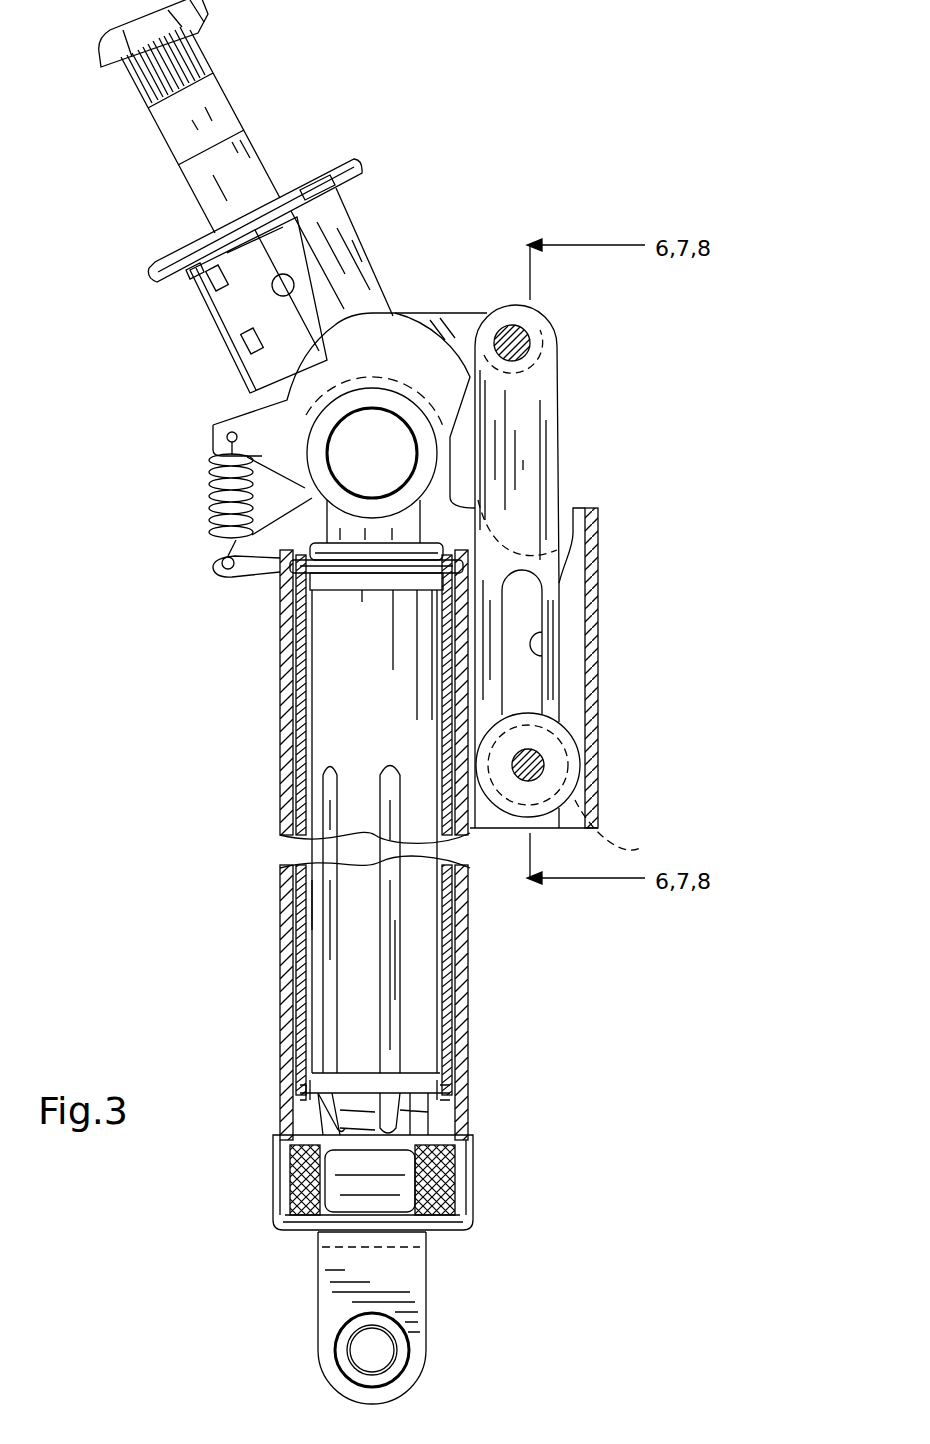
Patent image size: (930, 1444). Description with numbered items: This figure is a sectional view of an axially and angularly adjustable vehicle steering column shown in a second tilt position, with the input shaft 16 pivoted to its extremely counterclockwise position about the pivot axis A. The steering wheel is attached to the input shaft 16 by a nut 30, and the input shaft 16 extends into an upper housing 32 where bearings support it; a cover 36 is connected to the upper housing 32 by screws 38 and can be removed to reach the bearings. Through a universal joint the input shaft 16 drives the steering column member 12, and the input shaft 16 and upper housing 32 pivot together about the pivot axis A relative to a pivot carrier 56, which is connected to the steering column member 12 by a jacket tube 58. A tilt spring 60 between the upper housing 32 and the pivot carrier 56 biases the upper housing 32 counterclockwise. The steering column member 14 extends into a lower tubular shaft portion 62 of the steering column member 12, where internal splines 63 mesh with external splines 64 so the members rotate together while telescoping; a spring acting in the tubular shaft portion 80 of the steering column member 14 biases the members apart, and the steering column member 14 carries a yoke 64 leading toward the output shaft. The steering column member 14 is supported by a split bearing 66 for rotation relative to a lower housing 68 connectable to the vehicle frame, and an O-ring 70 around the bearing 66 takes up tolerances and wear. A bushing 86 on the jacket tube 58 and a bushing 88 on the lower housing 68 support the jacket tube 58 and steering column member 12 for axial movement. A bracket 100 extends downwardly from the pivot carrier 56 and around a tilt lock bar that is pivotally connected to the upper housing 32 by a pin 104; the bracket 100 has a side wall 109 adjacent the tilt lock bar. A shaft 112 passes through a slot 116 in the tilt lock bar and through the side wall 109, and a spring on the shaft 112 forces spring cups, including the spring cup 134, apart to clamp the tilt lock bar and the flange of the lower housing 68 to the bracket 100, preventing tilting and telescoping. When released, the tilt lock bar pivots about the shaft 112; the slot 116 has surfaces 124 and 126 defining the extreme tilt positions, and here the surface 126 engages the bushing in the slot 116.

The steering column member 12 is at (420, 1033).
The steering column member 14 is at (290, 1150).
The input shaft 16 is at (237, 160).
The nut 30 is at (200, 12).
The upper housing 32 is at (367, 290).
The cover 36 is at (190, 277).
The screws 38 is at (246, 352).
The pivot carrier 56 is at (276, 566).
The jacket tube 58 is at (283, 808).
The tilt spring 60 is at (372, 453).
The lower tubular shaft portion 62 is at (350, 985).
The internal splines 63 is at (328, 1015).
The external splines 64 is at (293, 1087).
The split bearing 66 is at (470, 1150).
The lower housing 68 is at (283, 757).
The O-ring 70 is at (292, 1180).
The tubular shaft portion 80 is at (433, 1082).
The bushing 86 is at (295, 1082).
The bushing 88 is at (278, 568).
The bracket 100 is at (598, 625).
The pin 104 is at (520, 335).
The side wall 109 is at (576, 525).
The shaft 112 is at (543, 767).
The slot 116 is at (547, 663).
The surface 124 is at (580, 535).
The surface 126 is at (627, 827).
The spring cup 134 is at (570, 783).
The pivot axis A is at (215, 498).